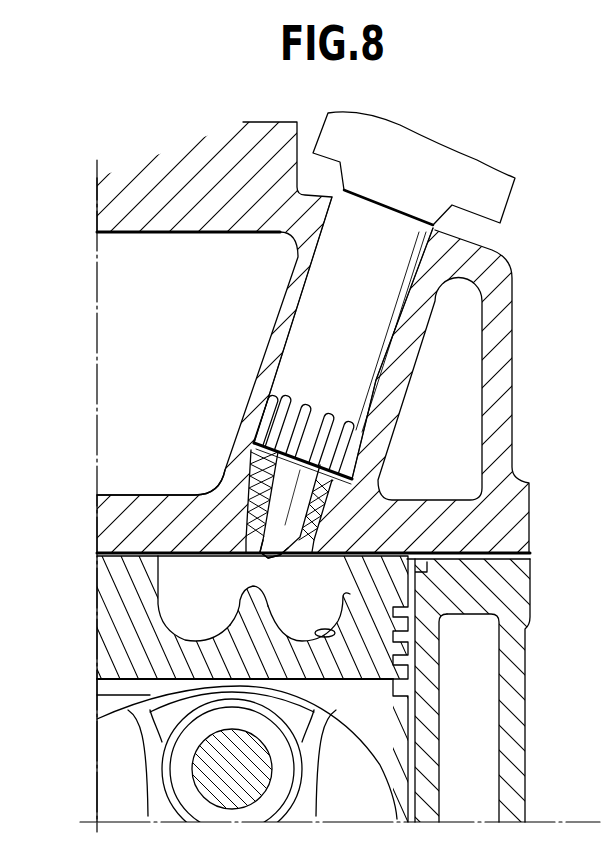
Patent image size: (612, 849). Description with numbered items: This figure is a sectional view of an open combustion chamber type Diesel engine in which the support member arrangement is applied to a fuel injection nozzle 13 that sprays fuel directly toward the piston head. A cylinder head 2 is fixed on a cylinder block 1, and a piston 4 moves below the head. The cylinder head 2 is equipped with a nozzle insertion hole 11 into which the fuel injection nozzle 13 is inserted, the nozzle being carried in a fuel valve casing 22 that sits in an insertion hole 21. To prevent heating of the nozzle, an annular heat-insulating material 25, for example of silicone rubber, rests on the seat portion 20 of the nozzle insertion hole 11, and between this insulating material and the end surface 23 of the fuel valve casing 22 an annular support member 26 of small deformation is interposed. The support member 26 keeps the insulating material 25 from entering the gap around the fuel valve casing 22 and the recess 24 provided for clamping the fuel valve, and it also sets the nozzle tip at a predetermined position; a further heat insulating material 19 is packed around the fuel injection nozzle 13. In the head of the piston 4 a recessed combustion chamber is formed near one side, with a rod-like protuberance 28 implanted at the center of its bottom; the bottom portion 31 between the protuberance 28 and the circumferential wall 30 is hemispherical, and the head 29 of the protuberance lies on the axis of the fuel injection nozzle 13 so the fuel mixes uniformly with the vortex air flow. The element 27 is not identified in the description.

The cylinder block 1 is at (526, 722).
The cylinder head 2 is at (512, 415).
The piston 4 is at (345, 596).
The nozzle insertion hole 11 is at (258, 553).
The fuel injection nozzle 13 is at (222, 487).
The heat insulating material 19 is at (530, 527).
The seat portion 20 is at (326, 486).
The insertion hole 21 is at (405, 320).
The fuel valve casing 22 is at (398, 292).
The end surface 23 is at (266, 440).
The recess for clamping the fuel valve 24 is at (333, 418).
The heat-insulating material 25 is at (254, 452).
The support member 26 is at (354, 480).
The piston bowl lip 27 is at (170, 579).
The rod-like protuberance 28 is at (240, 603).
The head of the rod-like protuberance 29 is at (252, 581).
The circumferential wall 30 is at (440, 662).
The bottom portion 31 is at (498, 675).